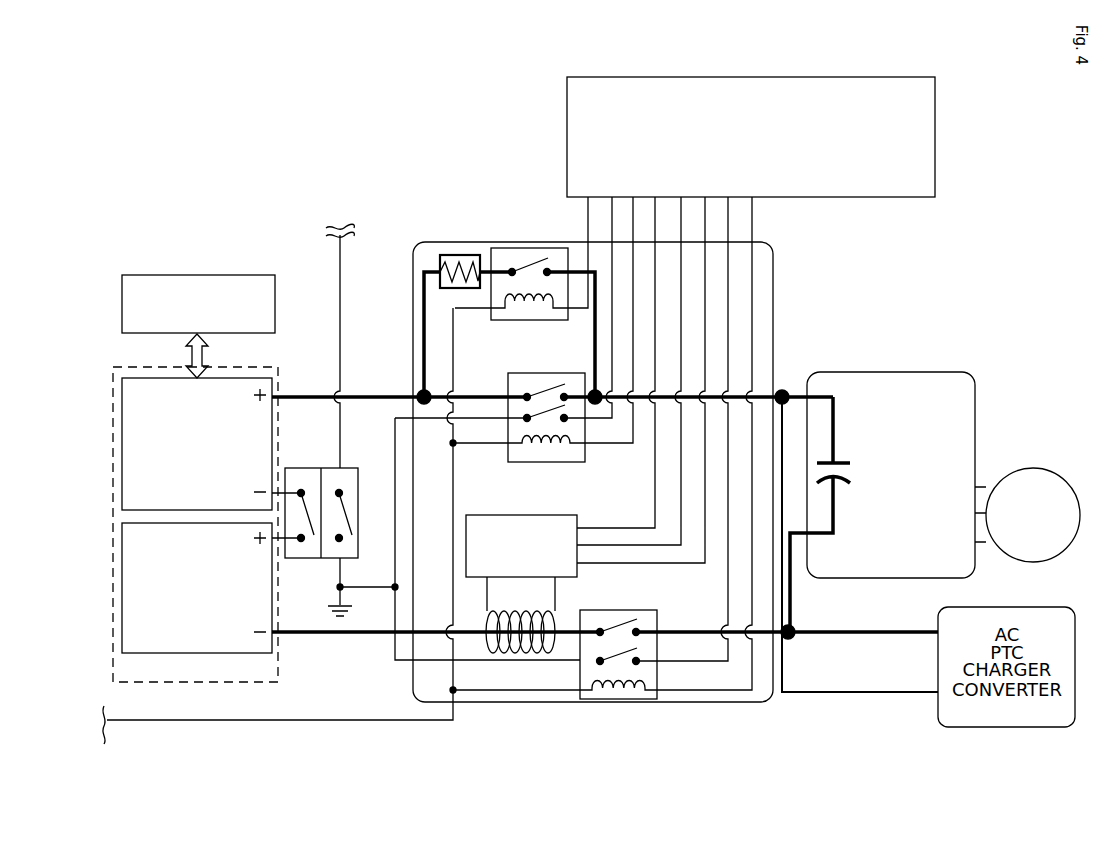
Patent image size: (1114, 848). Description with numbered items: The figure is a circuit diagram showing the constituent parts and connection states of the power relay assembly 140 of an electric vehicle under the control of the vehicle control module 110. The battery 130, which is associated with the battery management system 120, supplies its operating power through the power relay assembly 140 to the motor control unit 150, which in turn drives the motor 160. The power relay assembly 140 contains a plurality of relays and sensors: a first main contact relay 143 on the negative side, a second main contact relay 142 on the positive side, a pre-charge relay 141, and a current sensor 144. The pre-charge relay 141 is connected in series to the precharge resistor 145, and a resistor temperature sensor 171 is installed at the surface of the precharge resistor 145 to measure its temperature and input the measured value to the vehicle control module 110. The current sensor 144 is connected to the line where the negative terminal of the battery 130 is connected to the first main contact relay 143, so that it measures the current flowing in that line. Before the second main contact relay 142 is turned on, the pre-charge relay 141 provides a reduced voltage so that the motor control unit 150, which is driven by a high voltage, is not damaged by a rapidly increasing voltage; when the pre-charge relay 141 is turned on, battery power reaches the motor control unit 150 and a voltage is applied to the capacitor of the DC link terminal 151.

The vehicle control module (VCM) 110 is at (903, 78).
The battery management system (BMS) 120 is at (122, 307).
The battery 130 is at (113, 405).
The power relay assembly (PRA) 140 is at (543, 702).
The pre-charge relay 141 is at (527, 248).
The second main contact relay (+) 142 is at (585, 373).
The first main contact relay (−) 143 is at (655, 699).
The current sensor 144 is at (478, 577).
The precharge resistor 145 is at (437, 247).
The motor control unit (MCU) 150 is at (927, 371).
The capacitor of the DC link terminal 151 is at (843, 460).
The motor 160 is at (1068, 478).
The resistor temperature sensor 171 is at (456, 255).